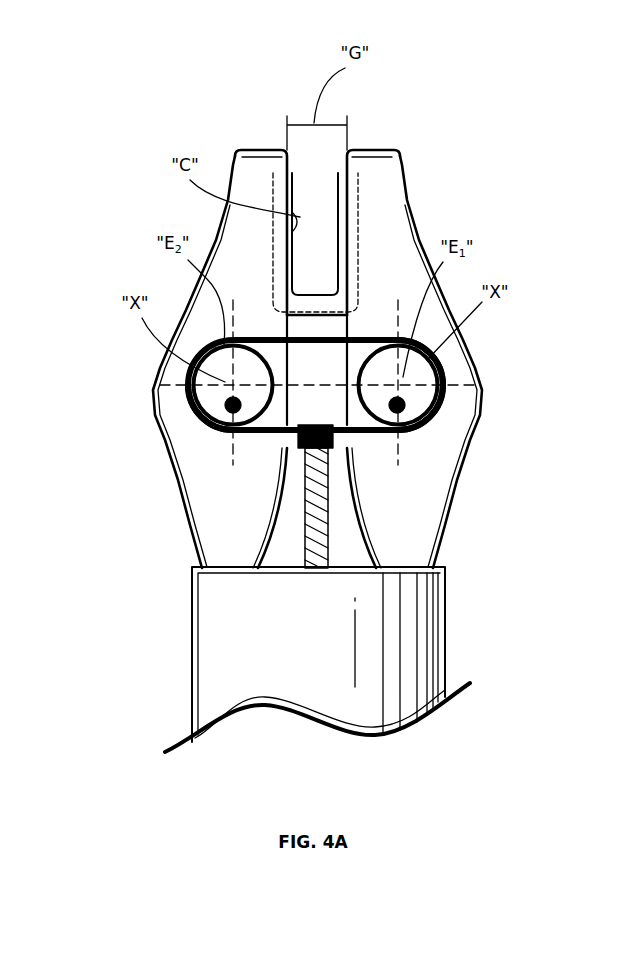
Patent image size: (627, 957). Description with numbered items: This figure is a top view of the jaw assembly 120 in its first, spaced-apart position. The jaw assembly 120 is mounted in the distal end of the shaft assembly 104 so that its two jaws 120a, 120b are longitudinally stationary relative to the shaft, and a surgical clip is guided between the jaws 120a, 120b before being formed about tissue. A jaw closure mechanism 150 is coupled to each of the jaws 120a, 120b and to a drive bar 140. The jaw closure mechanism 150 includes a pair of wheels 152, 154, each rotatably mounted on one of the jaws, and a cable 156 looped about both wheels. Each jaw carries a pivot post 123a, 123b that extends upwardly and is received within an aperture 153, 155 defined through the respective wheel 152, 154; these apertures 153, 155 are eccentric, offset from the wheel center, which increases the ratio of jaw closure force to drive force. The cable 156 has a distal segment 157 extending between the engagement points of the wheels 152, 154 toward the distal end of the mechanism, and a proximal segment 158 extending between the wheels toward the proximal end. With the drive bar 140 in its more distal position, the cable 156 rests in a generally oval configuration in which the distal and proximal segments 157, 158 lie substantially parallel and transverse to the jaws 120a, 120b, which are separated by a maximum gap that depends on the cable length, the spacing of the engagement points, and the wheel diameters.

The jaw assembly 120 is at (437, 143).
The jaw 120a is at (370, 165).
The jaw 120b is at (258, 165).
The distal segment 157 is at (318, 335).
The jaw closure mechanism 150 is at (330, 366).
The wheel 154 is at (215, 358).
The wheel 152 is at (433, 357).
The cable 156 is at (443, 372).
The aperture 153 is at (423, 430).
The aperture 155 is at (233, 405).
The pivot post 123a is at (405, 404).
The pivot post 123b is at (228, 388).
The proximal segment 158 is at (337, 432).
The drive bar 140 is at (307, 528).
The shaft assembly 104 is at (422, 655).